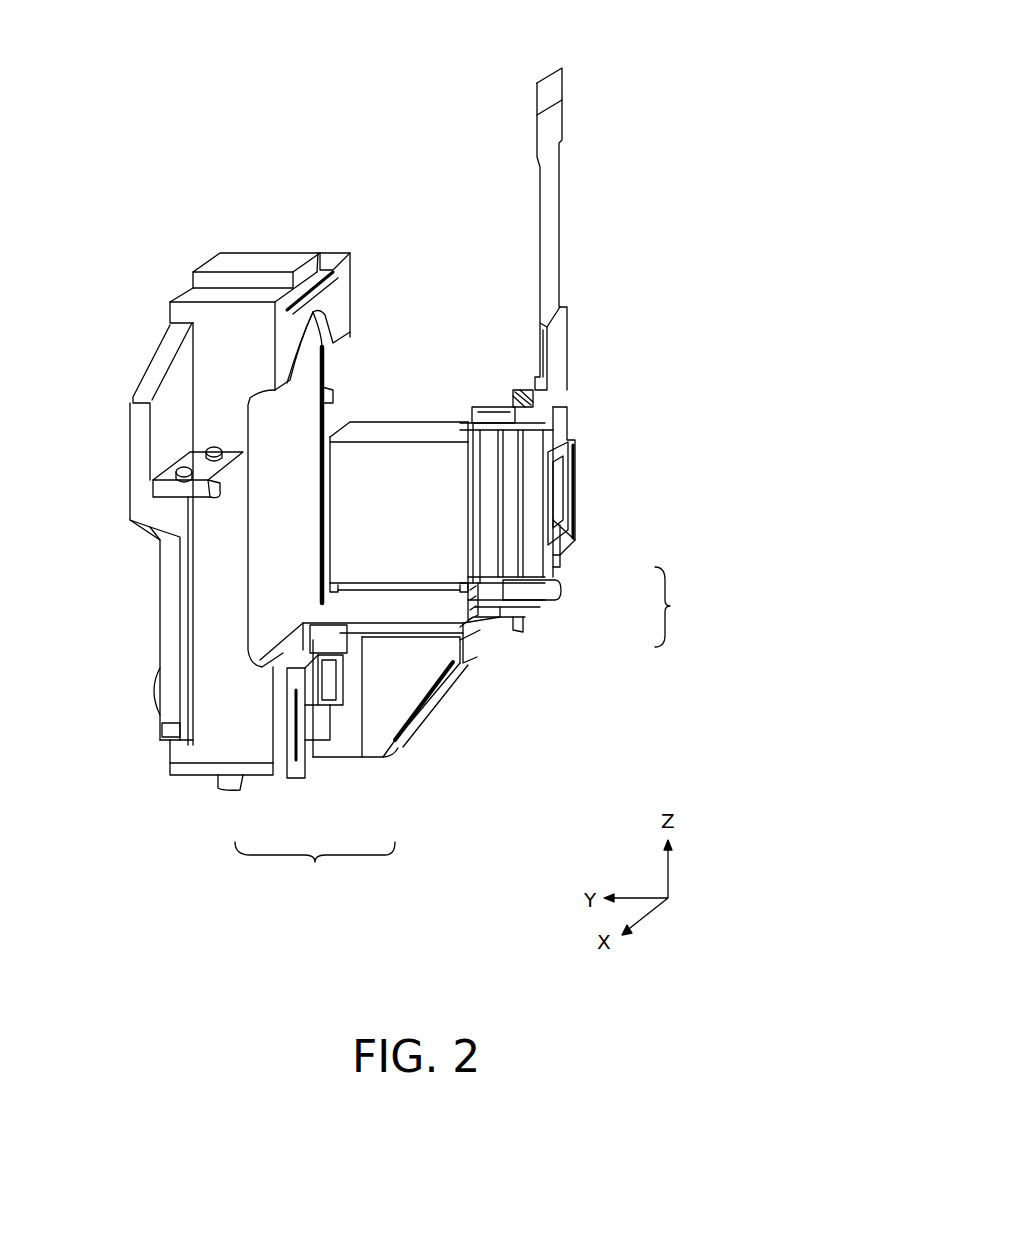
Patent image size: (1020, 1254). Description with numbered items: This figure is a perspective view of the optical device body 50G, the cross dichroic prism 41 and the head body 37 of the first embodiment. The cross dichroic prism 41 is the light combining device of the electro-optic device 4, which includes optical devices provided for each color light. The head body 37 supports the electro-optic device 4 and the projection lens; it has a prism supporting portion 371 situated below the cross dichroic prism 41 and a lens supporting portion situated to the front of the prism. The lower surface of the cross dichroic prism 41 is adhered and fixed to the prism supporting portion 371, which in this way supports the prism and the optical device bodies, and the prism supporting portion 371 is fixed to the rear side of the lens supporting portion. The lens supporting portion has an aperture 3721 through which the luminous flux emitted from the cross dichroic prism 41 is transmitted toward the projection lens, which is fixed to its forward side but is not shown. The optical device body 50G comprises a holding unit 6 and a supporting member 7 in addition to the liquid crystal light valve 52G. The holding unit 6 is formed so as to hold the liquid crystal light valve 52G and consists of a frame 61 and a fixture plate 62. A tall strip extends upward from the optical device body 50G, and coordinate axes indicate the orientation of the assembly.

The electro-optic device 4 is at (645, 92).
The aperture 3721 is at (303, 390).
The cross dichroic prism 41 is at (433, 462).
The optical device body 50G is at (591, 454).
The liquid crystal light valve 52G is at (575, 498).
The frame 61 is at (560, 575).
The fixture plate 62 is at (527, 631).
The holding unit 6 is at (675, 607).
The supporting member 7 is at (488, 583).
The prism supporting portion 371 is at (377, 743).
The head body 37 is at (315, 869).